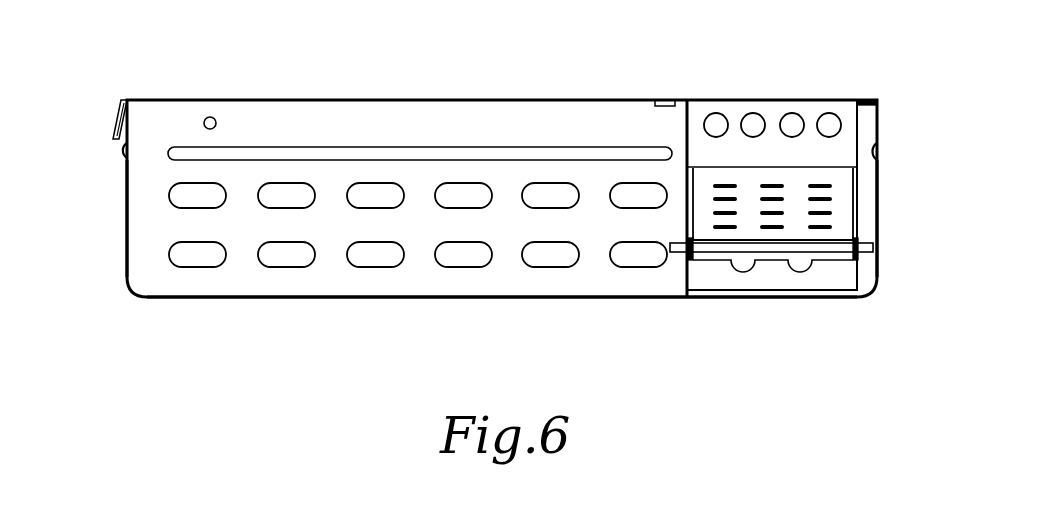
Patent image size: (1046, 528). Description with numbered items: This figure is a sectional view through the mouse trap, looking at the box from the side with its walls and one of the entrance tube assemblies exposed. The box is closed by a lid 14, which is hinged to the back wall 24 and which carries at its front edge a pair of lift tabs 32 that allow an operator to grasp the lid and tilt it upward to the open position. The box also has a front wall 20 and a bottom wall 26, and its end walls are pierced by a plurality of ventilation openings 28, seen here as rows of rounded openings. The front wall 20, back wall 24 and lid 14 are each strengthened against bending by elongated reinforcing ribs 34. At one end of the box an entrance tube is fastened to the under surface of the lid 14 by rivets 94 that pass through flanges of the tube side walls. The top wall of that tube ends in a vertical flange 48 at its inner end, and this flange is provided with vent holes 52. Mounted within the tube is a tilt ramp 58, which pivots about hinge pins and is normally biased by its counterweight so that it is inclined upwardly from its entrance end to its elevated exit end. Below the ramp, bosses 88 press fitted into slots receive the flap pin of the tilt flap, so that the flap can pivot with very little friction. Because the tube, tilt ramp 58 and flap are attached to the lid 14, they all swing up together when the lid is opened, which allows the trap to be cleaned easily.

The lid 14 is at (415, 99).
The front wall 20 is at (127, 222).
The back wall 24 is at (877, 240).
The bottom wall 26 is at (423, 297).
The ventilation openings 28 is at (205, 242).
The lift tabs 32 is at (120, 119).
The reinforcing ribs 34 is at (125, 151).
The vertical flange 48 is at (848, 143).
The vent holes 52 is at (829, 112).
The tilt ramp 58 is at (838, 195).
The boss 88 is at (680, 253).
The rivets 94 is at (666, 106).